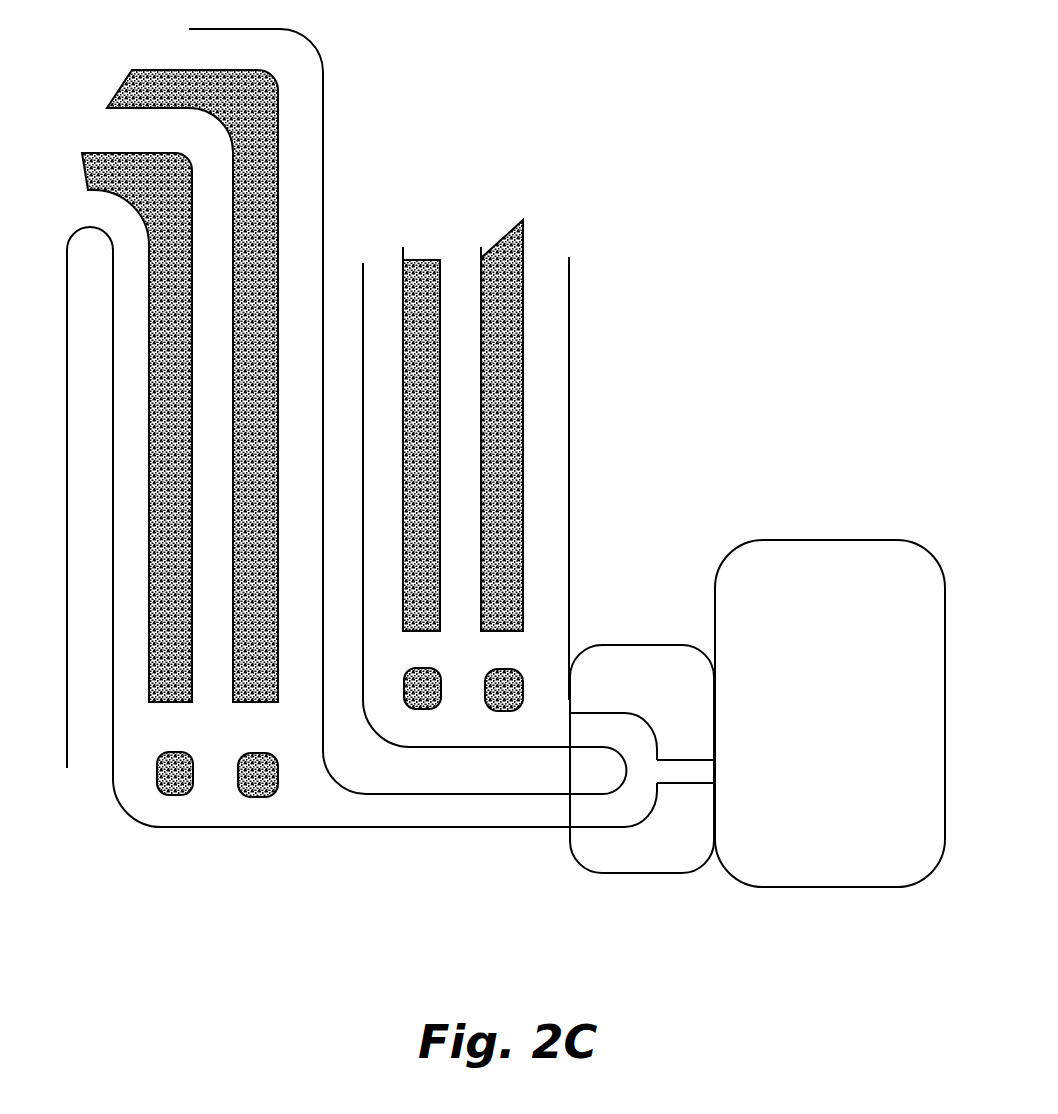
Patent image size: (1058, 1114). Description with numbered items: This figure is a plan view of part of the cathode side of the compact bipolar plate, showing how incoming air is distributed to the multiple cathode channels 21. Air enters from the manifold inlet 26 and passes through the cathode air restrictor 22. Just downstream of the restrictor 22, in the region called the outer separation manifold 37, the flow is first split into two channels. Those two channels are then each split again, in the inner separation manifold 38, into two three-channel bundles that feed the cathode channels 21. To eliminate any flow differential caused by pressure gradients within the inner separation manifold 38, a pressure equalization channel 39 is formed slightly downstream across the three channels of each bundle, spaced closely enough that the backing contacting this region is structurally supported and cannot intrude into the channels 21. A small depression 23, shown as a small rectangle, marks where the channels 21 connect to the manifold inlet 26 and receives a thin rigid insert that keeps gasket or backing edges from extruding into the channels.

The cathode channels 21 is at (382, 272).
The cathode air restrictor 22 is at (687, 775).
The small depressions 23 is at (667, 690).
The manifold inlet 26 is at (846, 706).
The outer separation manifold 37 is at (633, 812).
The inner separation manifold 38 is at (231, 817).
The pressure equalization channel 39 is at (273, 747).